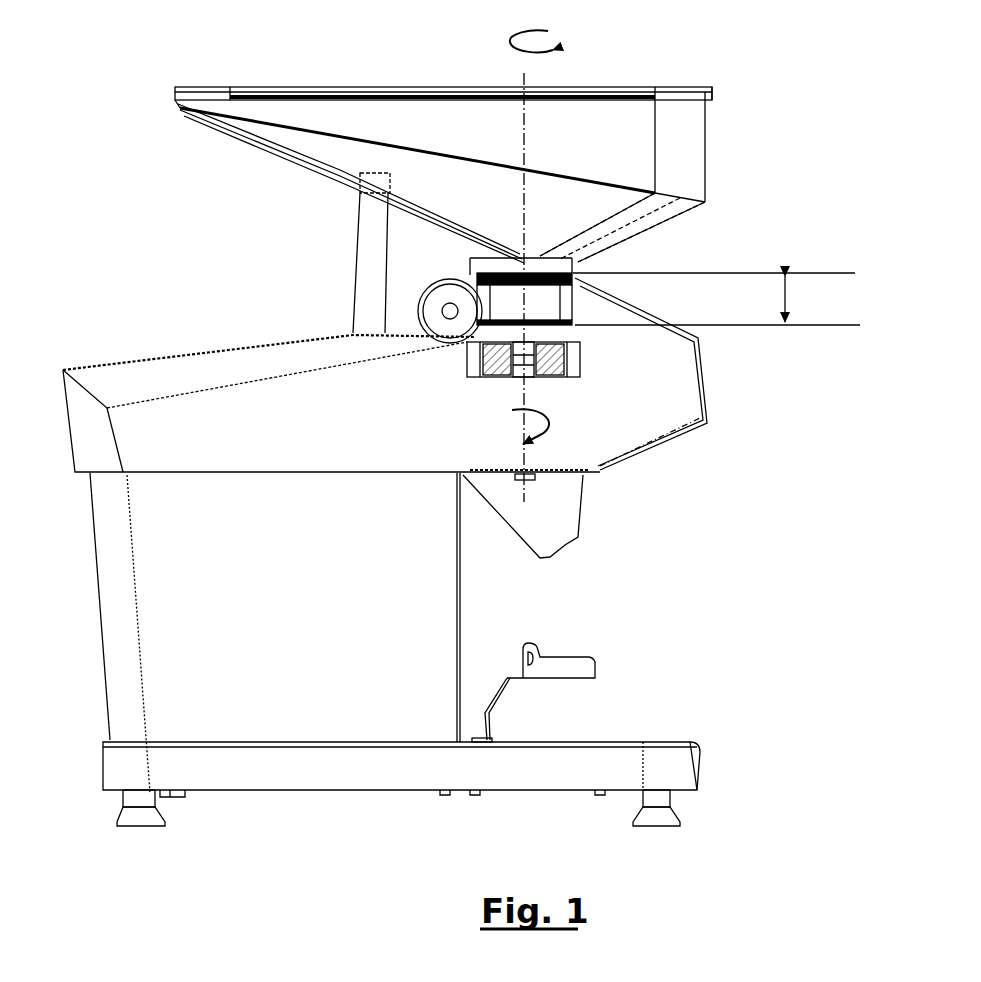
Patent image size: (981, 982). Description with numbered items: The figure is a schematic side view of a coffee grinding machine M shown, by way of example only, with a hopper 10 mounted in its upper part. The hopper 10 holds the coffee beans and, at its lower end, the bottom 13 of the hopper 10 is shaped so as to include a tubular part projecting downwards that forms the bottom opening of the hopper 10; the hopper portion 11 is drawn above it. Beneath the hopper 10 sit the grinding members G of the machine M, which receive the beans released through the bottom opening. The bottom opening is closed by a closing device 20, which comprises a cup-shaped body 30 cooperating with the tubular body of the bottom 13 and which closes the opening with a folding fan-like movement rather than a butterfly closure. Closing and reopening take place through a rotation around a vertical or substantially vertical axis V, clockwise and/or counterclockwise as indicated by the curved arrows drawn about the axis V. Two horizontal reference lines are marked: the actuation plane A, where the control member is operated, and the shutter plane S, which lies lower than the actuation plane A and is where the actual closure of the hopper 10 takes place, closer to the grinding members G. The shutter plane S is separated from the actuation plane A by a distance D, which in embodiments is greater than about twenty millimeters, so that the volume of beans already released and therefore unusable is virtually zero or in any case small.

The hopper 10 is at (511, 428).
The bean hopper 11 is at (635, 157).
The bottom of the hopper 13 is at (456, 258).
The closing device 20 is at (292, 311).
The cup-shaped body 30 is at (466, 303).
The coffee grinding machine M is at (735, 532).
The grinding members G is at (503, 390).
The vertical axis V is at (525, 266).
The actuation plane A is at (730, 277).
The shutter plane S is at (730, 329).
The distance D is at (798, 299).